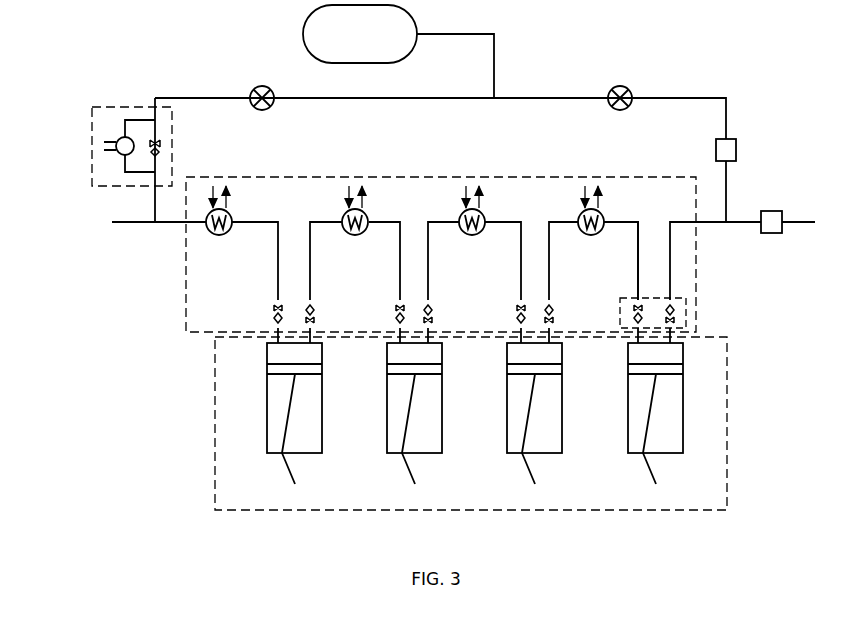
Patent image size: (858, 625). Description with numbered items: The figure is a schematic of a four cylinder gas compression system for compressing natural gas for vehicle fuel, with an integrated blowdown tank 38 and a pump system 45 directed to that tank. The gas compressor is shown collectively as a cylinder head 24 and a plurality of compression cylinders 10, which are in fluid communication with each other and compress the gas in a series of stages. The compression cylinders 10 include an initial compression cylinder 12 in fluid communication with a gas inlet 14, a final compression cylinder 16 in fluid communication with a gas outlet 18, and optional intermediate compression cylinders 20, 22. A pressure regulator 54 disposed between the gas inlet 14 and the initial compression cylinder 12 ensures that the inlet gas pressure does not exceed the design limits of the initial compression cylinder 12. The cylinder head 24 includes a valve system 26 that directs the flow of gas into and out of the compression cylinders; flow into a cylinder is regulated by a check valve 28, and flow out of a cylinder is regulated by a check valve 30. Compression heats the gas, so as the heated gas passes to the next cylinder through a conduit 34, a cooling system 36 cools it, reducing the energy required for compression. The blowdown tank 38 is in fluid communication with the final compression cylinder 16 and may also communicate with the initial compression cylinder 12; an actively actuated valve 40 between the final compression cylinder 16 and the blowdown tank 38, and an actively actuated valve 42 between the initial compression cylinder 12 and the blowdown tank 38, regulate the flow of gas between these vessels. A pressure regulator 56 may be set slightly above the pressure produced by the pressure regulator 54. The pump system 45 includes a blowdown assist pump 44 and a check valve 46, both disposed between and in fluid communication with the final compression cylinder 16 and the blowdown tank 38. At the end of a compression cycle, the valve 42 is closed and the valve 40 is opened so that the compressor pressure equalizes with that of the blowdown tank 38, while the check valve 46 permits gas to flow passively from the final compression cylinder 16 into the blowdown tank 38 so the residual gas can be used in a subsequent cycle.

The compression cylinders 10 is at (213, 428).
The initial compression cylinder 12 is at (667, 458).
The gas inlet 14 is at (810, 222).
The final compression cylinder 16 is at (308, 457).
The gas outlet 18 is at (121, 222).
The intermediate compression cylinder 20 is at (547, 458).
The intermediate compression cylinder 22 is at (428, 457).
The cylinder head 24 is at (184, 249).
The valve system 26 is at (655, 283).
The check valve 28 is at (677, 318).
The check valve 30 is at (632, 313).
The conduit 34 is at (633, 217).
The cooling system 36 is at (601, 207).
The blowdown tank 38 is at (349, 44).
The actively actuated valve 40 is at (252, 90).
The actively actuated valve 42 is at (625, 85).
The blowdown assist pump 44 is at (117, 154).
The pump system 45 is at (89, 110).
The check valve 46 is at (162, 146).
The pressure regulator 54 is at (786, 212).
The pressure regulator 56 is at (740, 139).